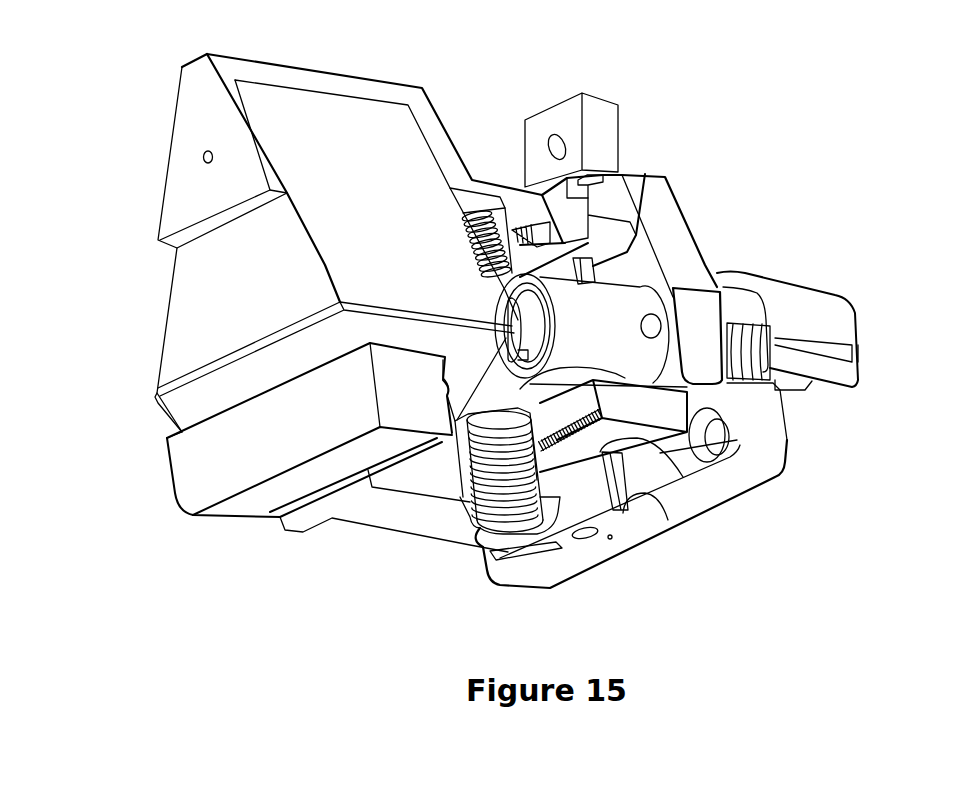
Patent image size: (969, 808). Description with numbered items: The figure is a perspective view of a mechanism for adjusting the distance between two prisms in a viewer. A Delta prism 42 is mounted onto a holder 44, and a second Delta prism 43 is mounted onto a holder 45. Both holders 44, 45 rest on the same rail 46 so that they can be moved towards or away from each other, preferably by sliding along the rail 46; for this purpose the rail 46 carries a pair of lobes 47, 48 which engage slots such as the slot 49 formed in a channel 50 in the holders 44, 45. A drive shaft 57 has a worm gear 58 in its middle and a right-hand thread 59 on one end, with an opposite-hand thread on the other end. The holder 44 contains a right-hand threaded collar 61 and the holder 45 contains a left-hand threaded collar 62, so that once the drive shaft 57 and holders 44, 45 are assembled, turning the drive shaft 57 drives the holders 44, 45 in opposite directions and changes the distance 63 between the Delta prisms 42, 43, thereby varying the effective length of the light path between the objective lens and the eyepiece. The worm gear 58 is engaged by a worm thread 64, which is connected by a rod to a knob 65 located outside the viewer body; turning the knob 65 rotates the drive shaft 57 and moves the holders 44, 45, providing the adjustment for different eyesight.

The Delta prism 42 is at (193, 310).
The Delta prism 43 is at (182, 410).
The holder 44 is at (228, 66).
The holder 45 is at (237, 507).
The rail 46 is at (617, 513).
The lobe 47 is at (662, 495).
The lobe 48 is at (573, 545).
The slot 49 is at (687, 440).
The channel 50 is at (627, 513).
The drive shaft 57 is at (497, 540).
The worm gear 58 is at (712, 433).
The right-hand thread 59 is at (484, 213).
The right-hand threaded collar 61 is at (592, 238).
The left-hand threaded collar 62 is at (517, 480).
The distance 63 is at (180, 383).
The worm thread 64 is at (612, 307).
The knob 65 is at (772, 338).